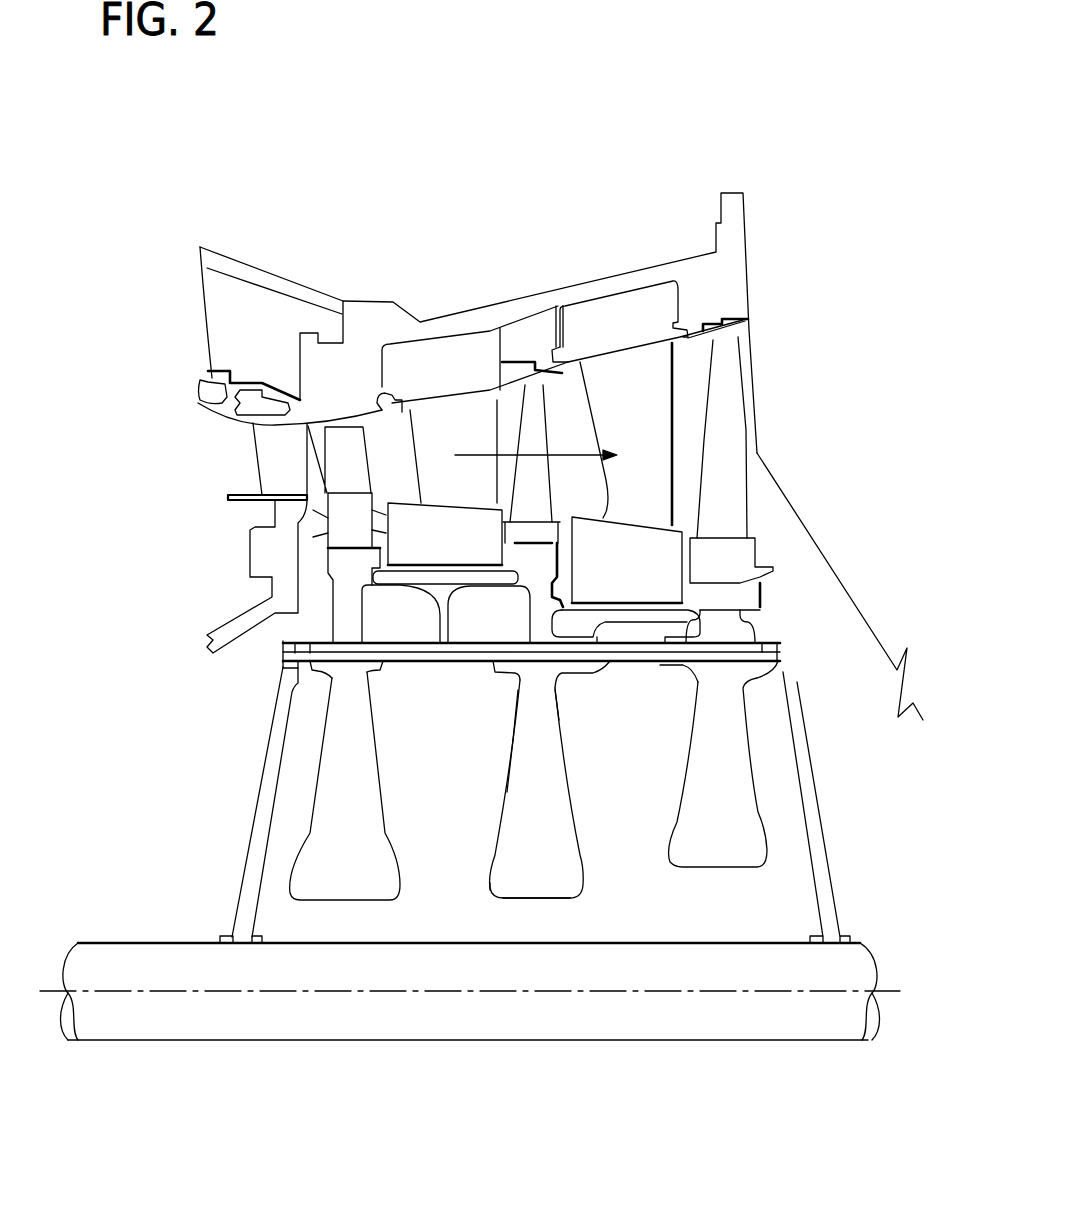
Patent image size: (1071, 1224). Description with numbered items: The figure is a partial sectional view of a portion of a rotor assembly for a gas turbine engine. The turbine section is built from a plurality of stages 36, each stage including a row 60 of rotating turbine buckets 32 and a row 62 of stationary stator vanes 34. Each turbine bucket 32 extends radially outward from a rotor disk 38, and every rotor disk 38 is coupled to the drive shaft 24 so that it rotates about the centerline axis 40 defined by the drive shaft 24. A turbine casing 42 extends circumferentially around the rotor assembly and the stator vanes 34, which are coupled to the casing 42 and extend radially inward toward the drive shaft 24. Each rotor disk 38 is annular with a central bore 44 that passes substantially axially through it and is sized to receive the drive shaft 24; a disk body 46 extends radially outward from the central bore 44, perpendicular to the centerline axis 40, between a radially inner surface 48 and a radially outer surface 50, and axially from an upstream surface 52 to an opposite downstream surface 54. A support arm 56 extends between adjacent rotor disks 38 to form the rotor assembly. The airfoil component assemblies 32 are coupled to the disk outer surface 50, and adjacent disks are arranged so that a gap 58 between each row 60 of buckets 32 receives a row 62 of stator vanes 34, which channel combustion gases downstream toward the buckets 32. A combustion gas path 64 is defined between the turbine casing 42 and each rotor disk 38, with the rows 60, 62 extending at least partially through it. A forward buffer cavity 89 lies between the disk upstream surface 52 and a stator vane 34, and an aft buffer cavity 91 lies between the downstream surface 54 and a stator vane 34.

The drive shaft 24 is at (457, 943).
The turbine bucket 32 is at (366, 487).
The stator vane 34 is at (421, 413).
The stage 36 is at (446, 348).
The rotor disk 38 is at (373, 740).
The centerline axis 40 is at (128, 992).
The turbine casing 42 is at (372, 302).
The central bore 44 is at (467, 898).
The disk body 46 is at (507, 792).
The radially inner surface 48 is at (556, 898).
The radially outer surface 50 is at (509, 619).
The upstream surface 52 is at (513, 740).
The downstream surface 54 is at (557, 718).
The support arm 56 is at (598, 662).
The gap 58 is at (503, 397).
The row of turbine buckets 60 is at (347, 400).
The row of stator vanes 62 is at (458, 378).
The combustion gas path 64 is at (478, 455).
The forward buffer cavity 89 is at (487, 540).
The aft buffer cavity 91 is at (578, 552).